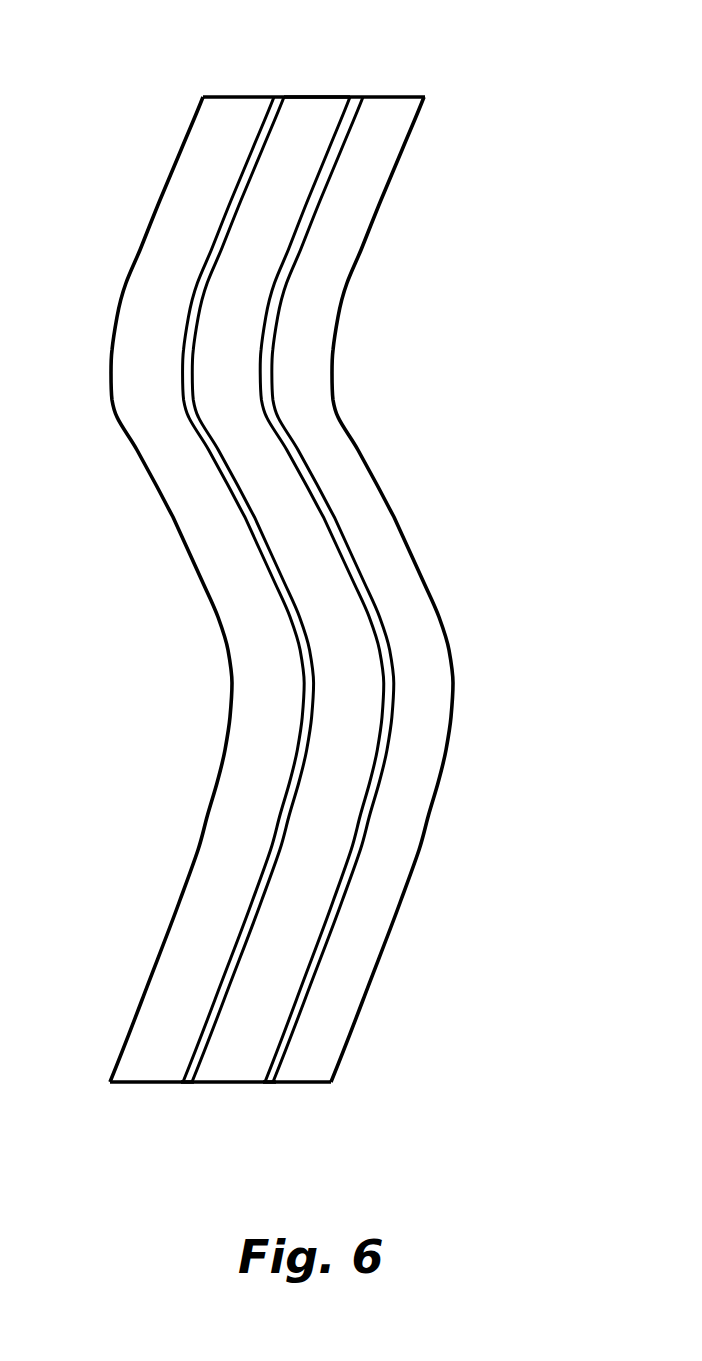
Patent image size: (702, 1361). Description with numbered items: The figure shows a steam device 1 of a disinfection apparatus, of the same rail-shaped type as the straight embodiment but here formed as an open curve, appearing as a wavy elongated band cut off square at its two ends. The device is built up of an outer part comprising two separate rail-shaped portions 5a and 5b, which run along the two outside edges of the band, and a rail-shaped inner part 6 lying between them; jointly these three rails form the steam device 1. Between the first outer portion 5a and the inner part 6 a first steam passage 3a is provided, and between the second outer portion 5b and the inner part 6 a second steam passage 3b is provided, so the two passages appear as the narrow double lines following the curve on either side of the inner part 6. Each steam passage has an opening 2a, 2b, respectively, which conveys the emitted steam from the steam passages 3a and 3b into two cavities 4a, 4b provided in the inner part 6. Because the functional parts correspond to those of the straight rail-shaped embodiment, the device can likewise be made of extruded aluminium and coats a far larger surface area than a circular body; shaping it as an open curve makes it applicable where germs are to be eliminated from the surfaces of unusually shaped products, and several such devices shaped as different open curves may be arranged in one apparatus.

The steam device 1 is at (394, 528).
The opening 2a is at (260, 893).
The opening 2b is at (333, 880).
The steam passage 3a is at (190, 1083).
The steam passage 3b is at (267, 1083).
The cavity 4a is at (217, 1003).
The cavity 4b is at (298, 1012).
The rail-shaped portion of the outer part 5a is at (227, 116).
The rail-shaped portion of the outer part 5b is at (380, 128).
The inner part 6 is at (308, 122).